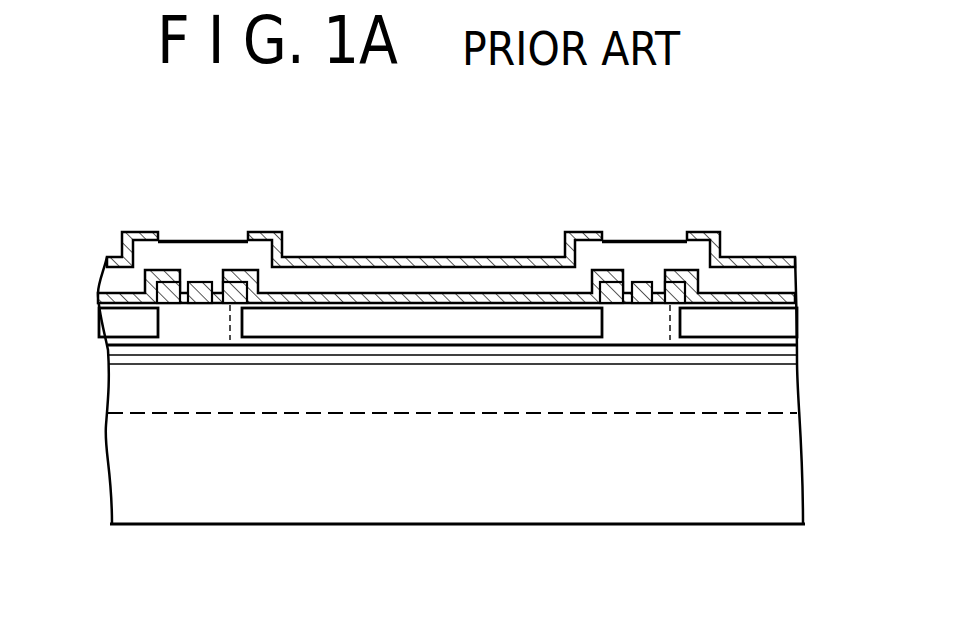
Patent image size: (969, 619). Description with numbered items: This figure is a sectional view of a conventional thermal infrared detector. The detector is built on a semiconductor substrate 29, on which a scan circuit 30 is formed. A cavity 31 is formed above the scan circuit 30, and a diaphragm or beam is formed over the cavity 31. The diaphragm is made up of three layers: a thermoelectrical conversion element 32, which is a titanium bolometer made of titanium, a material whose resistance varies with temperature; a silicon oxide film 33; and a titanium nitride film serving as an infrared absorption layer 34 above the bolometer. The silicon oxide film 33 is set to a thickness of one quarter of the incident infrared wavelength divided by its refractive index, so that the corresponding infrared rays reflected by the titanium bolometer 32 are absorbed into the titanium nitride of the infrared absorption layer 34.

The semiconductor substrate 29 is at (128, 466).
The scan circuit 30 is at (127, 386).
The cavity 31 is at (440, 320).
The thermoelectrical conversion element 32 is at (312, 299).
The silicon oxide film 33 is at (520, 273).
The infrared absorption layer 34 is at (370, 257).